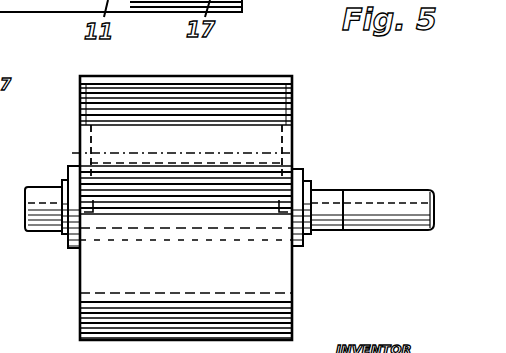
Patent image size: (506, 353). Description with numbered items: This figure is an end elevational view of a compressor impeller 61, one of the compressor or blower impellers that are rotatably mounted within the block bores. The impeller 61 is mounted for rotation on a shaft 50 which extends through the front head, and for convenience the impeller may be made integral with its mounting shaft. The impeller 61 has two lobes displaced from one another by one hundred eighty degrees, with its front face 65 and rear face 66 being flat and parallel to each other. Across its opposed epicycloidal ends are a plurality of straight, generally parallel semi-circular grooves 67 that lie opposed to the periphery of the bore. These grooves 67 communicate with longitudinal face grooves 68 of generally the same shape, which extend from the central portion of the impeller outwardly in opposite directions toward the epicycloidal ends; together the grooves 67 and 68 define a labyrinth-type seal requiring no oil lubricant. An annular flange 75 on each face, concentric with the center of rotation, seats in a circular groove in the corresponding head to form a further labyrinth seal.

The shaft 50 is at (46, 231).
The compressor impeller 61 is at (283, 155).
The front face 65 is at (80, 312).
The rear face 66 is at (293, 292).
The semi-circular groove 67 is at (272, 97).
The longitudinal face groove 68 is at (90, 155).
The annular flange 75 is at (298, 174).